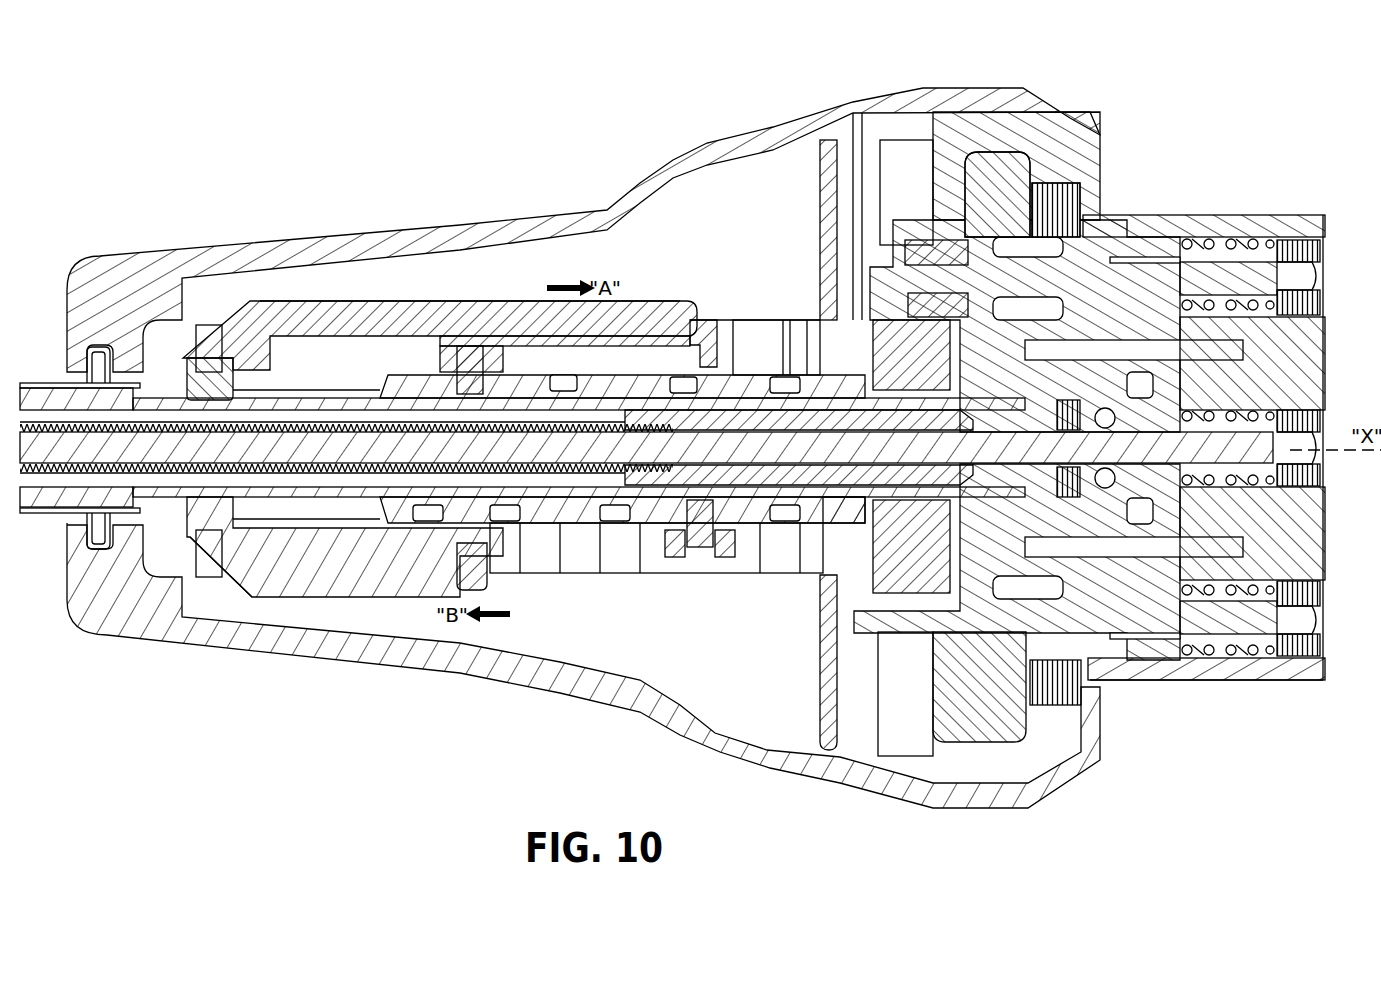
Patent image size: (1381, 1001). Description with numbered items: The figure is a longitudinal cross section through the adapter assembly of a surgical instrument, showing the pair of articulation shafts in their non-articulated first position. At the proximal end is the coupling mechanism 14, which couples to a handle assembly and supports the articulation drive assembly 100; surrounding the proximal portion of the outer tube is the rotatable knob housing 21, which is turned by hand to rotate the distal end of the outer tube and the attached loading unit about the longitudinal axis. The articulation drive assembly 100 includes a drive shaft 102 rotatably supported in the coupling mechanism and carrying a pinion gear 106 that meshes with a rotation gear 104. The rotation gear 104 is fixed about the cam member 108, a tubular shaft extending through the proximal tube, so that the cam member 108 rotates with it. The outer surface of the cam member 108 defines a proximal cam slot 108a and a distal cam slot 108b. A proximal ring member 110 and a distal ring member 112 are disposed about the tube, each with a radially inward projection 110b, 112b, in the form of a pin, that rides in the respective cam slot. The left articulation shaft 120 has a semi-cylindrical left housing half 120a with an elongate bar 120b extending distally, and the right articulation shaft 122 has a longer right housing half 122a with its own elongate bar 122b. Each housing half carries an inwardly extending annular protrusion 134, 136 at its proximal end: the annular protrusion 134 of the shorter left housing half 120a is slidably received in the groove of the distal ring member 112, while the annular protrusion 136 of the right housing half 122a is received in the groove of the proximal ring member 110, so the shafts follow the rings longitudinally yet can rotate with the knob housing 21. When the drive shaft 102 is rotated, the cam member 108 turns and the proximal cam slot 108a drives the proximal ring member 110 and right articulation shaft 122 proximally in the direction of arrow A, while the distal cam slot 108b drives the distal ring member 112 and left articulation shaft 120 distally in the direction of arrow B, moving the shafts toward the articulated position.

The coupling mechanism 14 is at (1233, 694).
The knob housing 21 is at (983, 95).
The articulation drive assembly 100 is at (1171, 224).
The drive shaft 102 is at (1087, 250).
The rotation gear 104 is at (937, 575).
The gear 106 is at (930, 252).
The cam member 108 is at (573, 515).
The proximal cam slot 108a is at (837, 567).
The distal cam slot 108b is at (582, 372).
The proximal ring member 110 is at (728, 567).
The projection 110b is at (703, 547).
The distal ring member 112 is at (503, 338).
The projection 112b is at (470, 352).
The left articulation shaft 120 is at (306, 604).
The left housing half 120a is at (253, 592).
The elongate bar 120b is at (127, 520).
The right articulation shaft 122 is at (374, 294).
The right housing half 122a is at (283, 300).
The elongate bar 122b is at (118, 380).
The annular protrusion 134 is at (455, 570).
The annular protrusion 136 is at (706, 350).